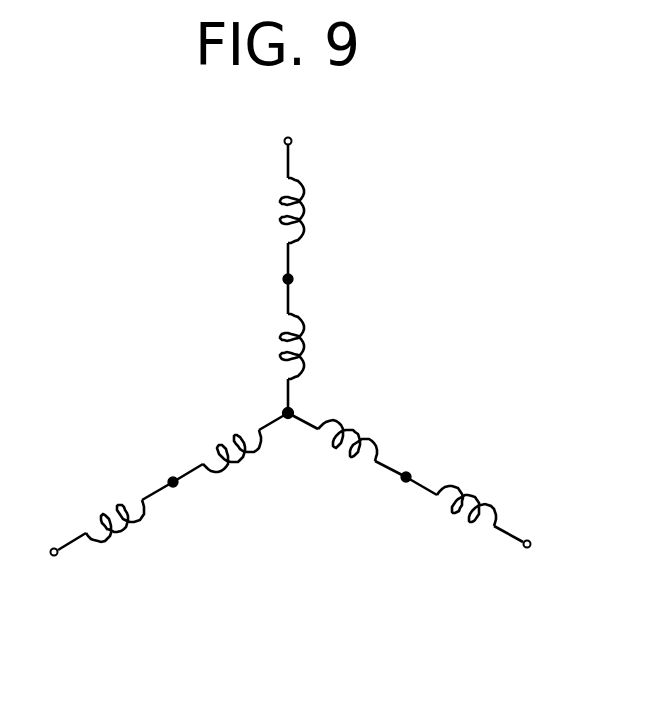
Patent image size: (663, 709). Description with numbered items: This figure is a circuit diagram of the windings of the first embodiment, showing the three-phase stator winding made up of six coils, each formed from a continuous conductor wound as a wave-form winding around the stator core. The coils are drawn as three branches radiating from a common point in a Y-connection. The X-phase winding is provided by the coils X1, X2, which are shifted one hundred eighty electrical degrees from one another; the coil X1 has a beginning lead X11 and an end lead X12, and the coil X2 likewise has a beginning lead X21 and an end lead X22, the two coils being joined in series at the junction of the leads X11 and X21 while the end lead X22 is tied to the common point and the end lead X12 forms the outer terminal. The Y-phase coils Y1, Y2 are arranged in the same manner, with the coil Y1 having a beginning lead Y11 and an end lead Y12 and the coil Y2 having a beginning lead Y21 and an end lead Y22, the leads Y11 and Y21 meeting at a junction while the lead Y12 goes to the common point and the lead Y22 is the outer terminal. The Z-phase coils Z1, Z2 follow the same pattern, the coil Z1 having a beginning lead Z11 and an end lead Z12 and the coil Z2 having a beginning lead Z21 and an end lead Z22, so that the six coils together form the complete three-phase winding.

The coil Z1 is at (305, 343).
The coil Z2 is at (304, 206).
The beginning lead Z11 is at (270, 295).
The end lead Z12 is at (267, 396).
The beginning lead Z21 is at (311, 261).
The end lead Z22 is at (266, 158).
The coil Y1 is at (355, 433).
The coil Y2 is at (475, 490).
The beginning lead Y11 is at (396, 460).
The end lead Y12 is at (315, 411).
The beginning lead Y21 is at (414, 500).
The end lead Y22 is at (515, 526).
The coil X1 is at (127, 527).
The coil X2 is at (246, 466).
The beginning lead X11 is at (149, 479).
The end lead X12 is at (77, 554).
The beginning lead X21 is at (196, 484).
The end lead X22 is at (282, 436).